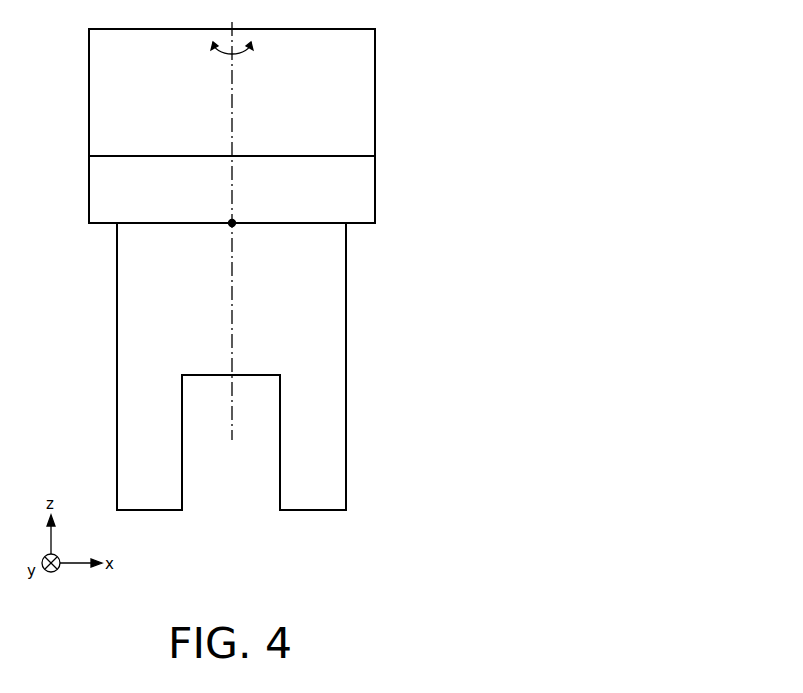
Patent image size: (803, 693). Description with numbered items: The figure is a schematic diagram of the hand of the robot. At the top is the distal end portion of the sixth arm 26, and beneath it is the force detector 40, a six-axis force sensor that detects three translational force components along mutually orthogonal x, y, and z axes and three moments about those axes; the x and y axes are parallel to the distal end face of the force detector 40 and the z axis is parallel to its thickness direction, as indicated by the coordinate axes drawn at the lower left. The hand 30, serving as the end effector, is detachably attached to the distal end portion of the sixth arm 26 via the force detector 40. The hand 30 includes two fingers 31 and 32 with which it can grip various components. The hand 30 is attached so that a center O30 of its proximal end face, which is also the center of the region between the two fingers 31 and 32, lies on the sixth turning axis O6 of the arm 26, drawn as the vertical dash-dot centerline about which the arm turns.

The sixth arm 26 is at (375, 88).
The force detector 40 is at (375, 187).
The hand 30 is at (347, 308).
The finger 31 is at (315, 450).
The finger 32 is at (148, 425).
The sixth turning axis O6 is at (232, 79).
The center of the proximal end face of the hand O30 is at (232, 223).